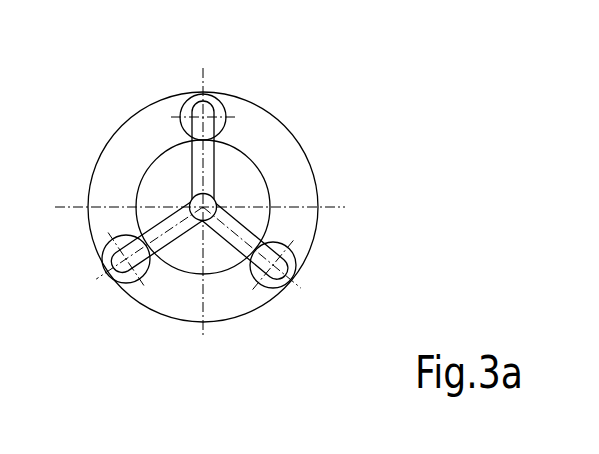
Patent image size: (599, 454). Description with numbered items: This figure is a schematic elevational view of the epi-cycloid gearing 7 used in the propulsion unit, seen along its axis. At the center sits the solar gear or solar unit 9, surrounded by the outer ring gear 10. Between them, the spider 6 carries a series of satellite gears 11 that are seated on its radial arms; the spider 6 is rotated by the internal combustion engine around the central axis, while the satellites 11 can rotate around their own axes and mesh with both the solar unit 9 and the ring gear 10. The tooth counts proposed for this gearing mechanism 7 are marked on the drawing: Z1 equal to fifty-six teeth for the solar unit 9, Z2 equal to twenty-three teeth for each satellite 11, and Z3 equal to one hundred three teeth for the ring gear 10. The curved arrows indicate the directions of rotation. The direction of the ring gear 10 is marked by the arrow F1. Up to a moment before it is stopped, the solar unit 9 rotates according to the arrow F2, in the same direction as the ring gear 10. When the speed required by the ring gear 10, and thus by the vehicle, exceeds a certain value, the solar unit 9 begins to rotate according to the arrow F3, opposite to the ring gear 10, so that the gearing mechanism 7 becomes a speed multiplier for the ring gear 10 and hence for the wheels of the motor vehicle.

The epi-cycloid gearing 7 is at (349, 144).
The ring gear 10 is at (283, 122).
The solar unit 9 is at (230, 165).
The spider 6 is at (194, 157).
The satellite gears 11 is at (222, 105).
The number of teeth of the solar unit Z1 is at (268, 218).
The number of teeth of each satellite Z2 is at (288, 275).
The number of teeth of the ring gear Z3 is at (248, 314).
The arrow indicating rotation direction of the ring gear F1 is at (236, 49).
The arrow indicating rotation direction of the solar unit F2 is at (294, 194).
The arrow indicating reversed rotation direction of the solar unit F3 is at (138, 144).